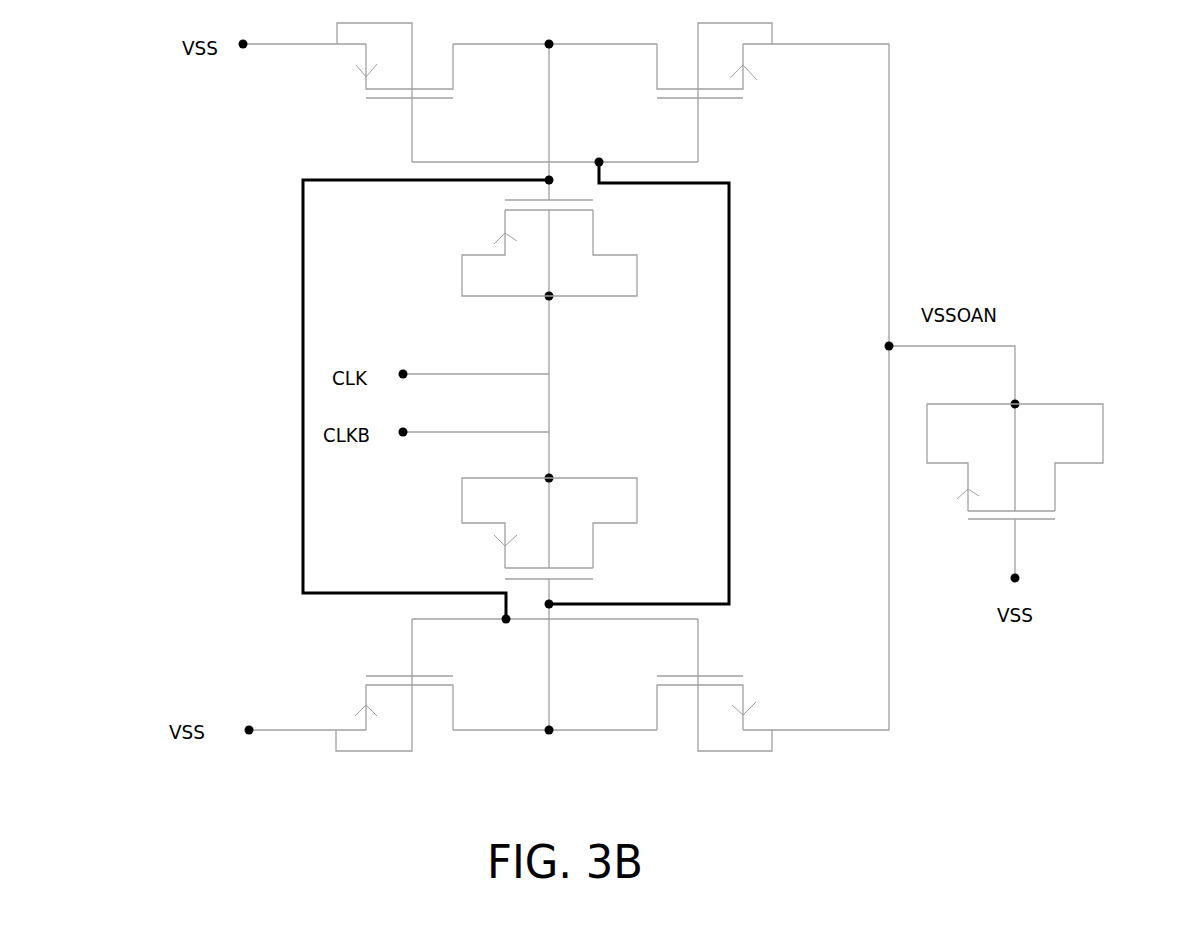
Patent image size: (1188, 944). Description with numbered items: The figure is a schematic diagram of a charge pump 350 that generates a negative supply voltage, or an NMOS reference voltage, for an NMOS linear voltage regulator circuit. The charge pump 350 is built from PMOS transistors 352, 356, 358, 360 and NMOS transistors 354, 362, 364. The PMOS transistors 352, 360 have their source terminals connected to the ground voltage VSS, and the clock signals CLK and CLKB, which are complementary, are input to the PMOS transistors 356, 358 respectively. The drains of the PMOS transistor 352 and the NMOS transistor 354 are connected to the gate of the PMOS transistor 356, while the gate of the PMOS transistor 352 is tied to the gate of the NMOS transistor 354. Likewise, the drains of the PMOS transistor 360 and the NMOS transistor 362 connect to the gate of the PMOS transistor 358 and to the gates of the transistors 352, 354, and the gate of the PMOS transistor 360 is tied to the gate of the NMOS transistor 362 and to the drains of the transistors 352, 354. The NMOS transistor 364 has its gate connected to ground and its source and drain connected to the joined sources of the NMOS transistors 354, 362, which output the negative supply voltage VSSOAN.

The charge pump 350 is at (847, 777).
The PMOS transistor 352 is at (357, 92).
The NMOS transistor 354 is at (752, 92).
The PMOS transistor 356 is at (520, 248).
The PMOS transistor 358 is at (525, 528).
The PMOS transistor 360 is at (386, 685).
The NMOS transistor 362 is at (727, 685).
The NMOS transistor 364 is at (1046, 461).